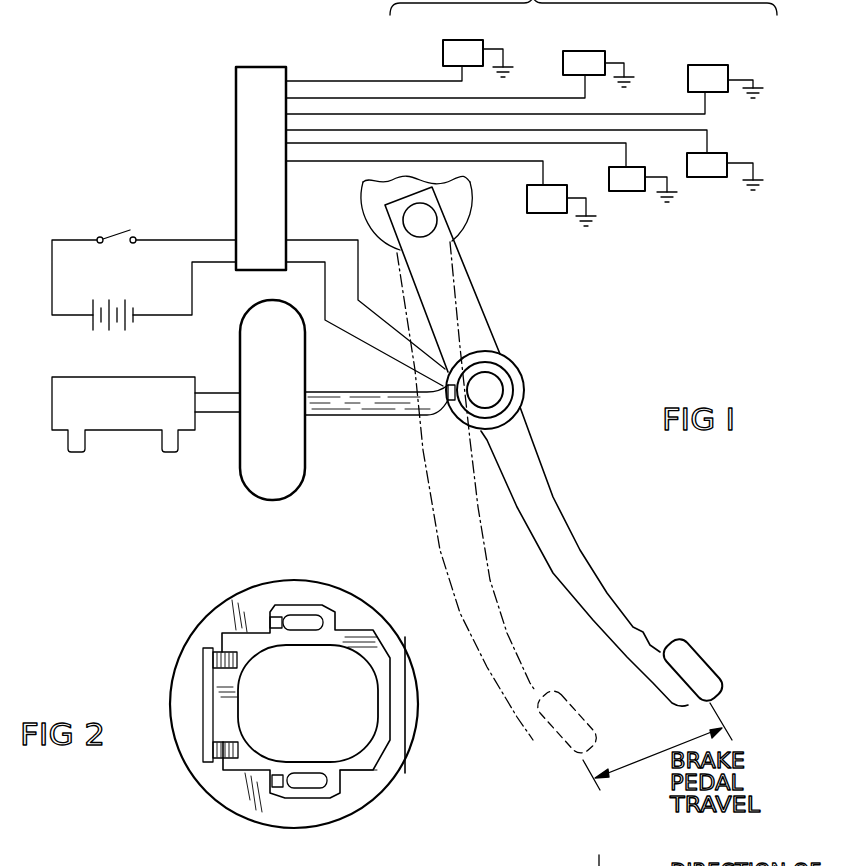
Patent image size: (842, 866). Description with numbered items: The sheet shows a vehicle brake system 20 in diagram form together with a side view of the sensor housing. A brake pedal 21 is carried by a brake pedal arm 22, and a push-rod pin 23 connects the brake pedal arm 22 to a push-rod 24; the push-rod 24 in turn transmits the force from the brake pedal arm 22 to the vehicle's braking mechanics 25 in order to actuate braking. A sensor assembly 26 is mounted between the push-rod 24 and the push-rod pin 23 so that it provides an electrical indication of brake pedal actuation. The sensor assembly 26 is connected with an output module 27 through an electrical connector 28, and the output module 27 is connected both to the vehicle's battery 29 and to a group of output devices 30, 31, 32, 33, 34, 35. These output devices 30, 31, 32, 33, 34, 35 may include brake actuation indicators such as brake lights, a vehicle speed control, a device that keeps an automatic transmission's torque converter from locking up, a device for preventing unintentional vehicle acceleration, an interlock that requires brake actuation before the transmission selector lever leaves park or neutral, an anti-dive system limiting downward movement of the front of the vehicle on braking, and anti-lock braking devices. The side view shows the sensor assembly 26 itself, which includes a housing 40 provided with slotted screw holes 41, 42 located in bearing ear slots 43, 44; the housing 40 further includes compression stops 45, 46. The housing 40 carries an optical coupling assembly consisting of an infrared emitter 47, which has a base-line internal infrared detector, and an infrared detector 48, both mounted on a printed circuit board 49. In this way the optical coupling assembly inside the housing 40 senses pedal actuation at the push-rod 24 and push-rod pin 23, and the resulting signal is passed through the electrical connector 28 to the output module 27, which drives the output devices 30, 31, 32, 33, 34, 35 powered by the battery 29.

In FIG. 1, the vehicle brake system 20 is at (697, 284).
In FIG. 1, the brake pedal 21 is at (702, 648).
In FIG. 1, the brake pedal arm 22 is at (557, 503).
In FIG. 1, the push-rod pin 23 is at (490, 390).
In FIG. 1, the push-rod 24 is at (325, 418).
In FIG. 1, the braking mechanics 25 is at (234, 477).
In FIG. 1, the sensor assembly 26 is at (508, 361).
In FIG. 1, the output module 27 is at (235, 138).
In FIG. 1, the electrical connector 28 is at (443, 398).
In FIG. 1, the battery 29 is at (109, 300).
In FIG. 1, the output device 30 is at (443, 53).
In FIG. 1, the output device 31 is at (578, 50).
In FIG. 1, the output device 32 is at (705, 65).
In FIG. 1, the output device 33 is at (705, 177).
In FIG. 1, the output device 34 is at (625, 191).
In FIG. 1, the output device 35 is at (537, 213).
In FIG. 2, the housing 40 is at (222, 803).
In FIG. 2, the slotted screw hole 41 is at (315, 785).
In FIG. 2, the slotted screw hole 42 is at (317, 620).
In FIG. 2, the bearing ear slot 43 is at (303, 603).
In FIG. 2, the bearing ear slot 44 is at (307, 802).
In FIG. 2, the compression stop 45 is at (270, 622).
In FIG. 2, the compression stop 46 is at (273, 782).
In FIG. 2, the infrared emitter 47 is at (220, 653).
In FIG. 2, the infrared detector 48 is at (220, 757).
In FIG. 2, the printed circuit board 49 is at (207, 677).